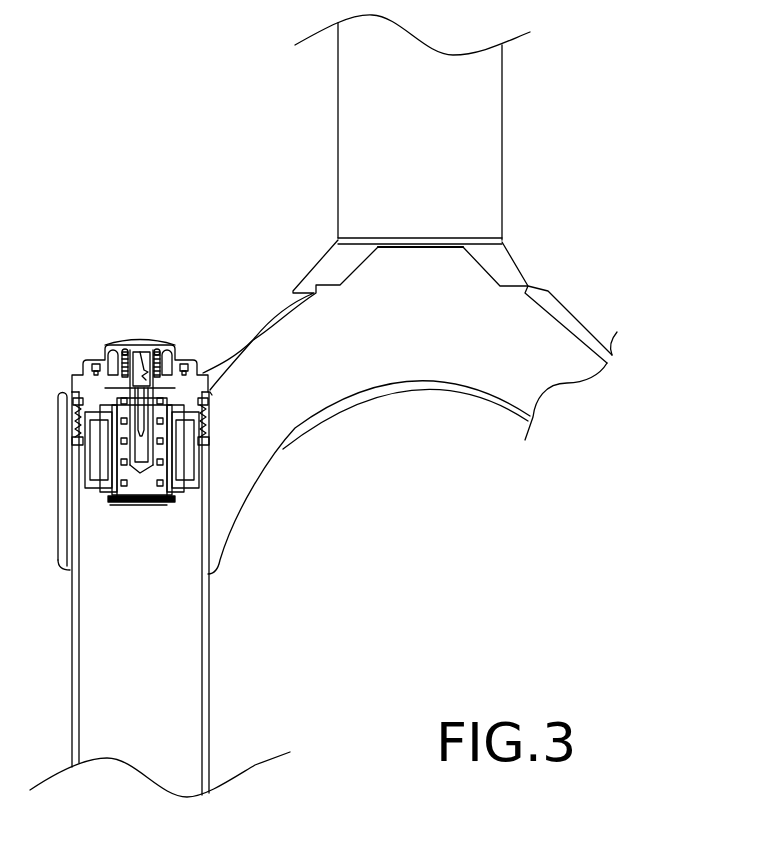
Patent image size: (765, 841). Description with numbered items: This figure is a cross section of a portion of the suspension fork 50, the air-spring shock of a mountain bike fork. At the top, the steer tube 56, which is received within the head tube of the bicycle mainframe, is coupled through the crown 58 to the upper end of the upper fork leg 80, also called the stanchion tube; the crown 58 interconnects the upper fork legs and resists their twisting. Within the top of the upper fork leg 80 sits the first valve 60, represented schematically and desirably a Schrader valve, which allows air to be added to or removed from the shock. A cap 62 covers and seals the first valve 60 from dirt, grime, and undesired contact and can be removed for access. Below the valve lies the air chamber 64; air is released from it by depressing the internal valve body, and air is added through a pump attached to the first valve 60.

The suspension fork 50 is at (118, 108).
The steer tube 56 is at (470, 150).
The crown 58 is at (553, 307).
The first valve 60 is at (157, 352).
The cap 62 is at (112, 345).
The air chamber 64 is at (118, 598).
The upper fork leg 80 is at (210, 732).